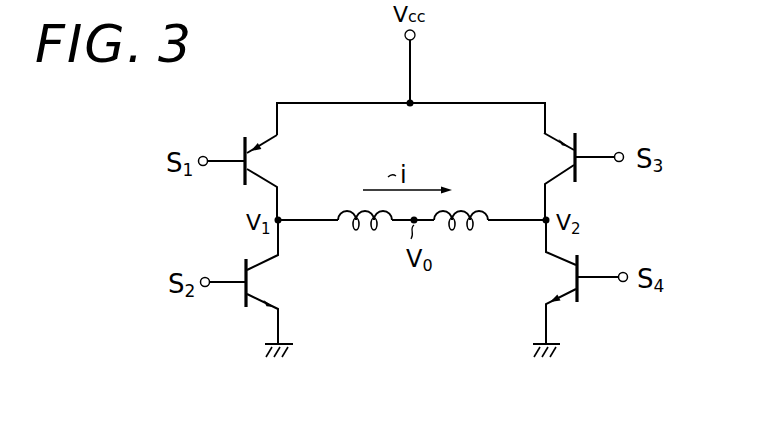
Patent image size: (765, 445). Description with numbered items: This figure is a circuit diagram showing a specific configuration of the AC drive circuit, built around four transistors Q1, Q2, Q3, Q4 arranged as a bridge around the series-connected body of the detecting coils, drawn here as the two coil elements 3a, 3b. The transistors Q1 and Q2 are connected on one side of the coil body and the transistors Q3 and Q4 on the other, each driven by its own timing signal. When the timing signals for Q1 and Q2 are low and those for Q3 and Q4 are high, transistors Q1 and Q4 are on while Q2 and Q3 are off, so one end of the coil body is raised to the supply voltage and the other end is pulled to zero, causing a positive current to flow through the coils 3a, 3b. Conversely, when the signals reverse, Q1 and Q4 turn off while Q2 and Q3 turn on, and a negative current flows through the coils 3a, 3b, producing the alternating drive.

The first inductor (coil) 3a is at (373, 228).
The second inductor (coil) 3b is at (478, 228).
The transistor Q1 is at (254, 164).
The transistor Q2 is at (257, 284).
The transistor Q3 is at (557, 154).
The transistor Q4 is at (560, 272).